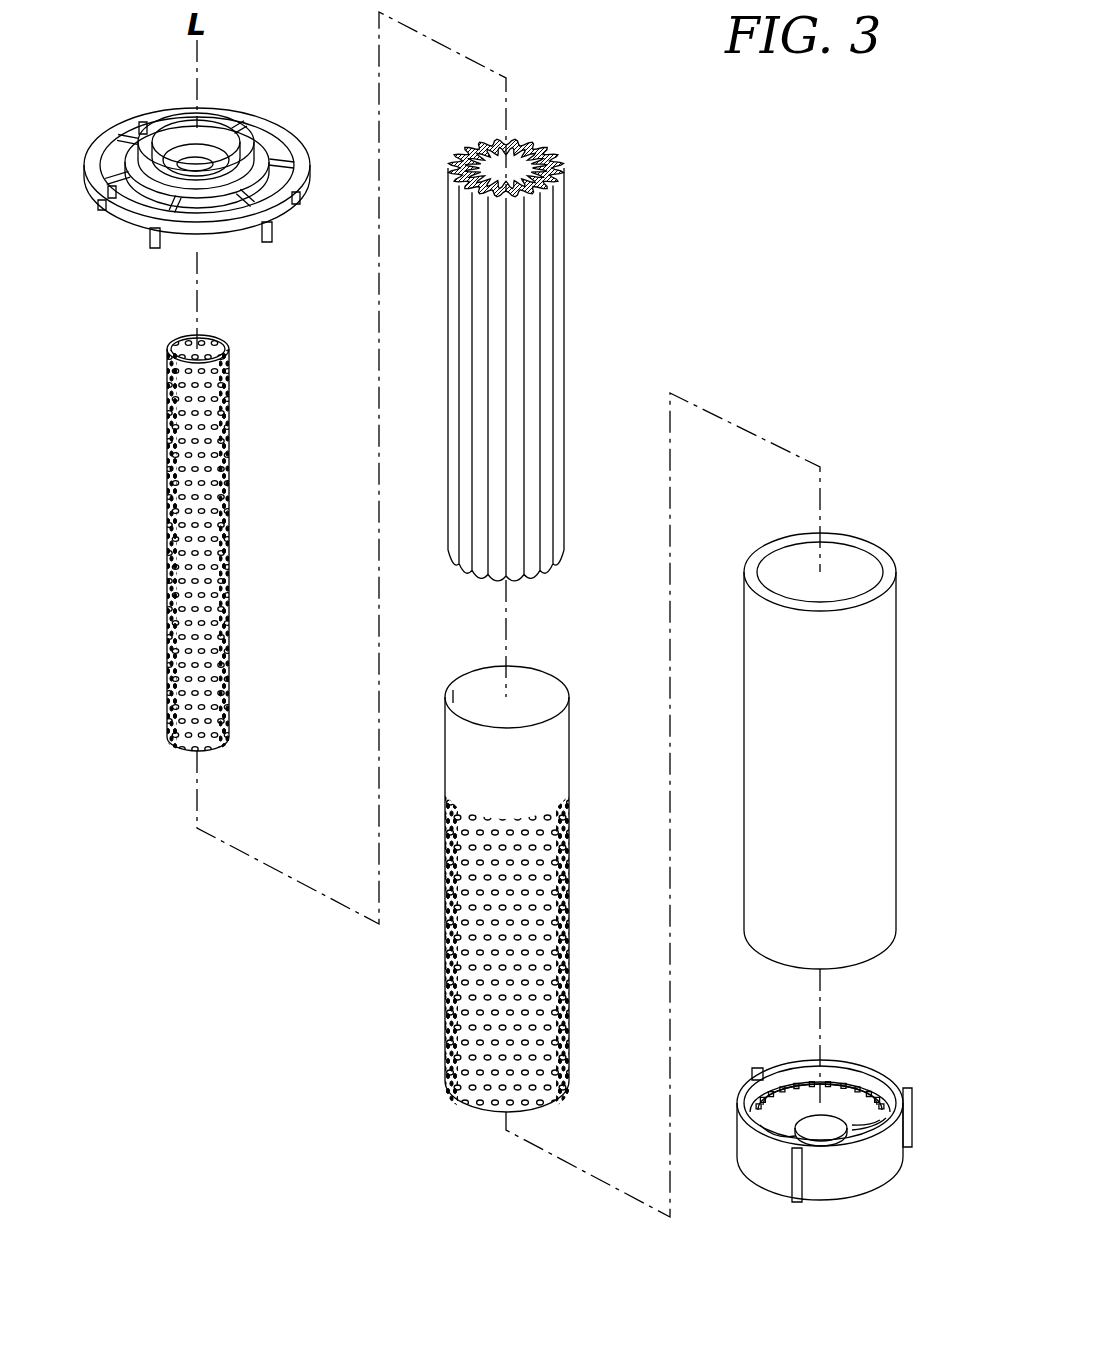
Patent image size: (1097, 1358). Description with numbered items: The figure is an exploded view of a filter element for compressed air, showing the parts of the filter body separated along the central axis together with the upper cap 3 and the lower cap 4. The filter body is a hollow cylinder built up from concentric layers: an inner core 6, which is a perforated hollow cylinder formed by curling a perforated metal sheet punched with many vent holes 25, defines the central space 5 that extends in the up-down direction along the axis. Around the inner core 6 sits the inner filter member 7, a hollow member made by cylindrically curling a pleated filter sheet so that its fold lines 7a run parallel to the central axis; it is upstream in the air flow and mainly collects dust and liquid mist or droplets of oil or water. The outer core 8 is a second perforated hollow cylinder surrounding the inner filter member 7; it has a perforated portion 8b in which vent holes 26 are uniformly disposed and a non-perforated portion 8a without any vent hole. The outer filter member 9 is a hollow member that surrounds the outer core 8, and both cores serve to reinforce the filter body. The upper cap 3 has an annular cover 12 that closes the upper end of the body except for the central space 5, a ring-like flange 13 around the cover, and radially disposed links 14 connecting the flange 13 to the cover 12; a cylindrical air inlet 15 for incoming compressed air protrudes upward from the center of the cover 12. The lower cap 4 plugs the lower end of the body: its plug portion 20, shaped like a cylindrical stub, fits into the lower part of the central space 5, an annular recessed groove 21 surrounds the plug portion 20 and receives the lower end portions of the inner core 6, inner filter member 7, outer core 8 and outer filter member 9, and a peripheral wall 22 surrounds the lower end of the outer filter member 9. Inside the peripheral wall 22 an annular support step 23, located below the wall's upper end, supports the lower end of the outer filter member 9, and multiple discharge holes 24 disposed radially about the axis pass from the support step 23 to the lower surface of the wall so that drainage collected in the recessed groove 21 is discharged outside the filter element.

The upper cap 3 is at (197, 128).
The annular cover 12 is at (122, 135).
The ring-like flange 13 is at (283, 133).
The links 14 is at (143, 122).
The air inlet 15 is at (225, 140).
The central space 5 is at (180, 521).
The inner core 6 is at (167, 451).
The vent holes 25 is at (211, 641).
The inner filter member 7 is at (566, 360).
The fold lines 7a is at (523, 346).
The outer core 8 is at (504, 889).
The non-perforated portion 8a is at (532, 769).
The perforated portion 8b is at (511, 936).
The vent holes 26 is at (510, 1053).
The outer filter member 9 is at (848, 677).
The lower cap 4 is at (843, 1124).
The plug portion 20 is at (797, 1133).
The recessed groove 21 is at (882, 1127).
The peripheral wall 22 is at (758, 1097).
The annular support step 23 is at (802, 1087).
The discharge holes 24 is at (866, 1090).